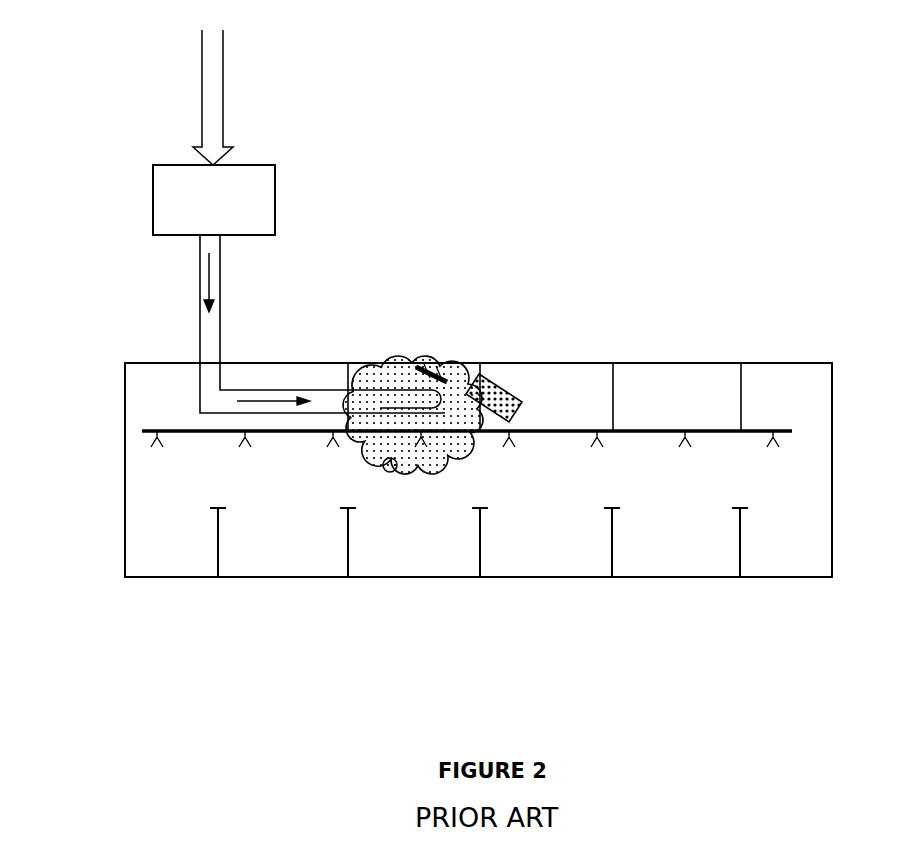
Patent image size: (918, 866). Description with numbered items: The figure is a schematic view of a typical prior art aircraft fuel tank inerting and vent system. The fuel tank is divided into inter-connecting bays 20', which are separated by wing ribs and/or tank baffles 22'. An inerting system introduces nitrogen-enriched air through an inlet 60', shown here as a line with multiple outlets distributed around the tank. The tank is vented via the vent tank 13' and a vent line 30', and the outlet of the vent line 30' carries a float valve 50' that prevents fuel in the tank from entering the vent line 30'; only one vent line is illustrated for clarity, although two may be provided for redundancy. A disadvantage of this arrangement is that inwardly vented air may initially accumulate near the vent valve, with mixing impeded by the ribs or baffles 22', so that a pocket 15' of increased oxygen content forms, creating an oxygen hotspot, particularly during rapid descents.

The vent tank 13' is at (266, 132).
The vent line 30' is at (275, 324).
The pocket 15' is at (440, 315).
The float valve 50' is at (531, 348).
The inlet 60' is at (413, 488).
The bays 20' is at (478, 550).
The wing ribs and/or tank baffles 22' is at (479, 590).